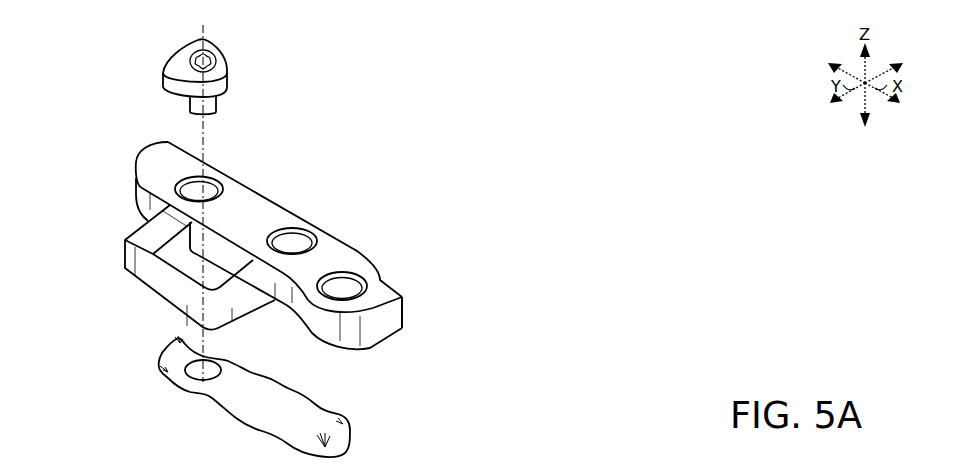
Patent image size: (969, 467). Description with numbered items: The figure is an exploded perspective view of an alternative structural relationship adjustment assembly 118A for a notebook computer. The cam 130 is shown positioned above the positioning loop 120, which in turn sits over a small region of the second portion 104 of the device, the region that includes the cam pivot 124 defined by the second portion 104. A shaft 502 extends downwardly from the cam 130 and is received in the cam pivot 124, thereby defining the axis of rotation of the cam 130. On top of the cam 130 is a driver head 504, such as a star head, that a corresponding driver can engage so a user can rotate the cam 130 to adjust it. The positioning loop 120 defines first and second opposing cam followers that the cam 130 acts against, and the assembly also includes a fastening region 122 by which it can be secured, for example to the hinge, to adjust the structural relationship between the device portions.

The structural relationship adjustment assembly 118A is at (494, 54).
The cam 130 is at (278, 76).
The driver head 504 is at (221, 47).
The shaft 502 is at (218, 101).
The fastening region 122 is at (412, 307).
The cam pivot 124 is at (220, 360).
The positioning loop 120 is at (169, 328).
The second portion 104 is at (343, 396).